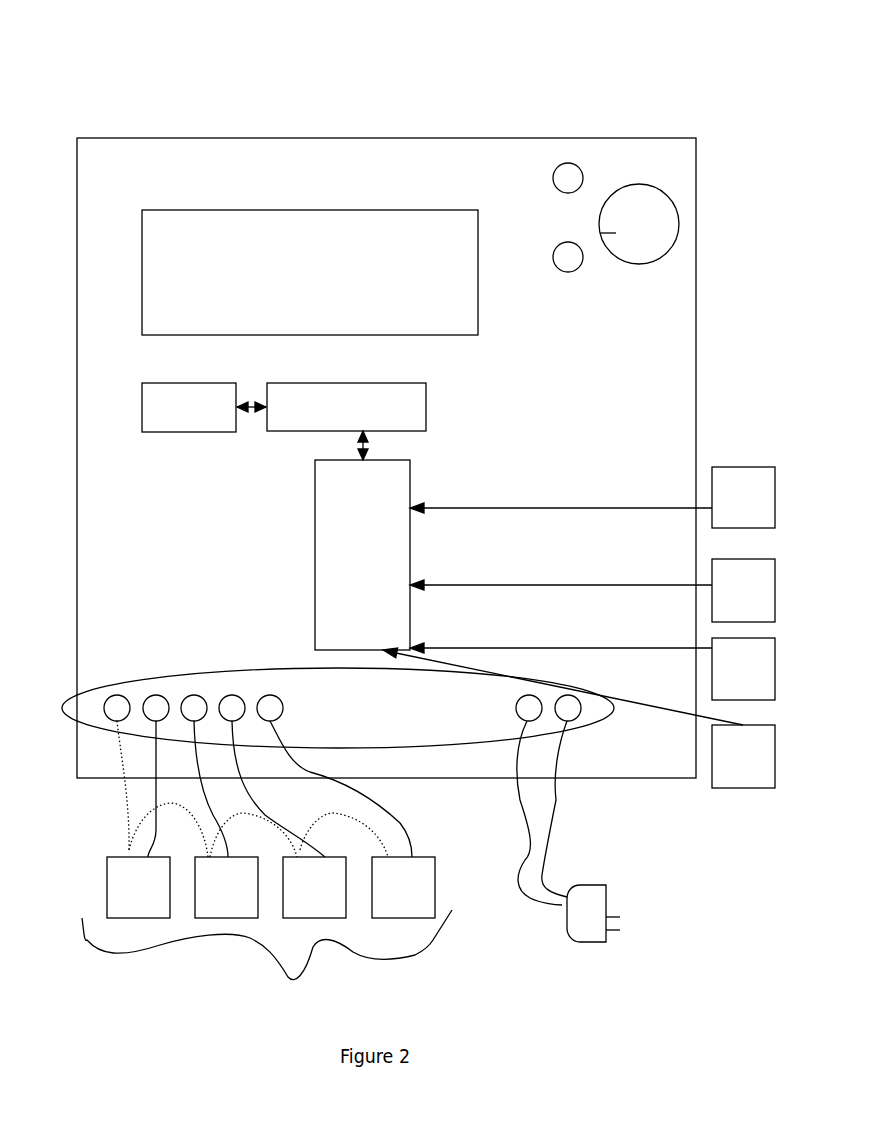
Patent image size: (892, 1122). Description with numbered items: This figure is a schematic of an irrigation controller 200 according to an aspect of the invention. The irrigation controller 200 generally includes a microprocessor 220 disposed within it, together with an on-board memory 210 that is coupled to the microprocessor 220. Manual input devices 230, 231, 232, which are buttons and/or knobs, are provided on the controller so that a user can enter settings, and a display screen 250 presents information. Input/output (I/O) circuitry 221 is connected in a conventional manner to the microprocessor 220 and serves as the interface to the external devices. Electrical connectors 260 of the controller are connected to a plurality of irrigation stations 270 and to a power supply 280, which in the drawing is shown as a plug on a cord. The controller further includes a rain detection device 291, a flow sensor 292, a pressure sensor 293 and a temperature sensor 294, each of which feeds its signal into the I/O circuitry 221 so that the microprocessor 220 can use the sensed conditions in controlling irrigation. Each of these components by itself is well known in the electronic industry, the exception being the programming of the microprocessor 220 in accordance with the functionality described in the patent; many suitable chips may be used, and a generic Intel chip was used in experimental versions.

The irrigation controller 200 is at (58, 788).
The on-board memory 210 is at (145, 383).
The microprocessor 220 is at (427, 403).
The input/output (I/O) circuitry 221 is at (315, 505).
The manual input device 230 is at (553, 252).
The manual input device 231 is at (552, 167).
The manual input device 232 is at (630, 185).
The display screen 250 is at (182, 208).
The electrical connectors 260 is at (319, 708).
The irrigation stations 270 is at (267, 866).
The power supply 280 is at (567, 937).
The rain detection device 291 is at (712, 482).
The flow sensor 292 is at (712, 577).
The pressure sensor 293 is at (738, 638).
The temperature sensor 294 is at (727, 788).